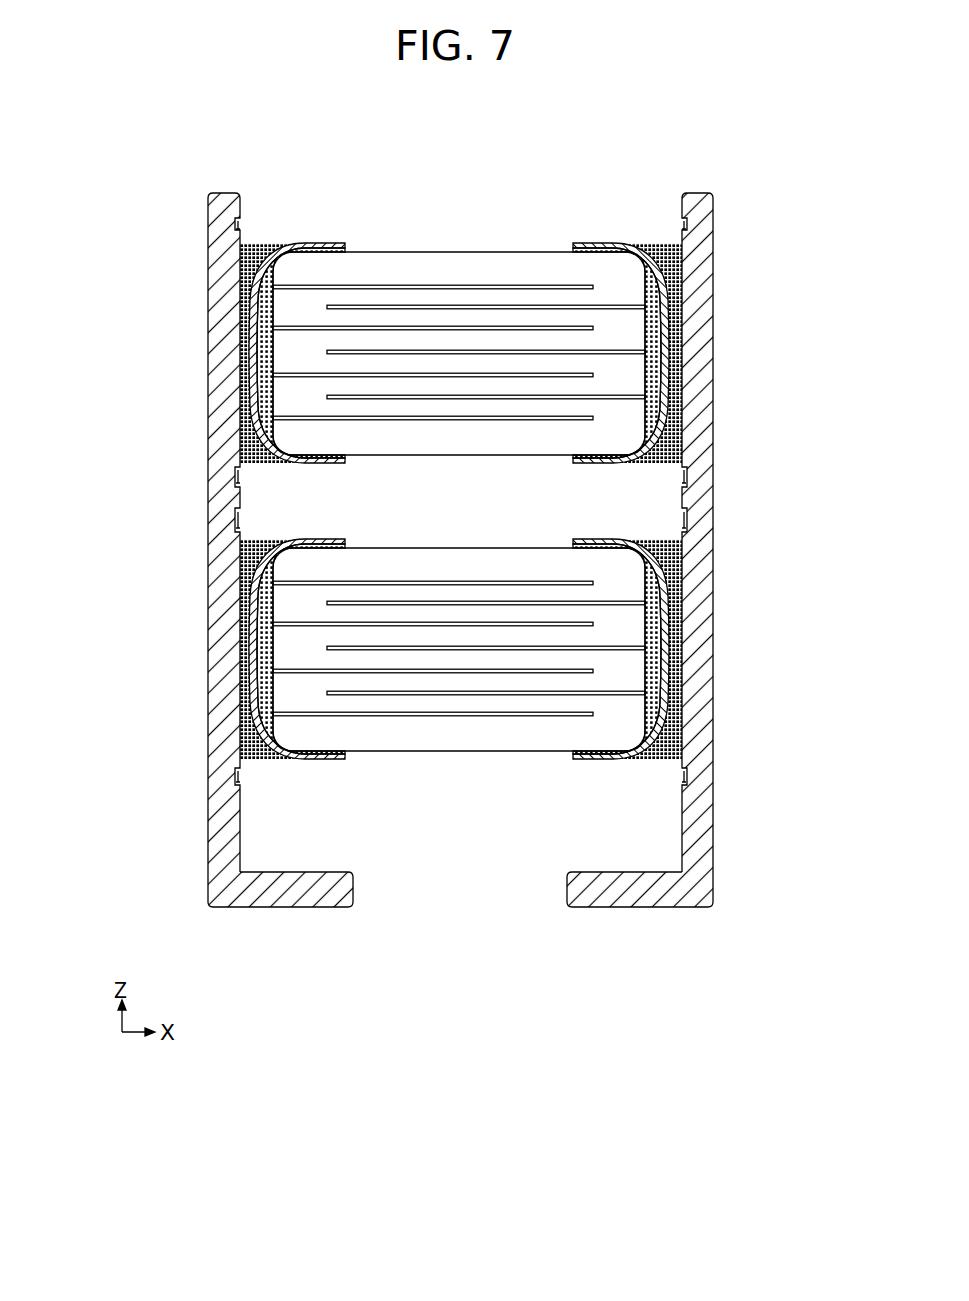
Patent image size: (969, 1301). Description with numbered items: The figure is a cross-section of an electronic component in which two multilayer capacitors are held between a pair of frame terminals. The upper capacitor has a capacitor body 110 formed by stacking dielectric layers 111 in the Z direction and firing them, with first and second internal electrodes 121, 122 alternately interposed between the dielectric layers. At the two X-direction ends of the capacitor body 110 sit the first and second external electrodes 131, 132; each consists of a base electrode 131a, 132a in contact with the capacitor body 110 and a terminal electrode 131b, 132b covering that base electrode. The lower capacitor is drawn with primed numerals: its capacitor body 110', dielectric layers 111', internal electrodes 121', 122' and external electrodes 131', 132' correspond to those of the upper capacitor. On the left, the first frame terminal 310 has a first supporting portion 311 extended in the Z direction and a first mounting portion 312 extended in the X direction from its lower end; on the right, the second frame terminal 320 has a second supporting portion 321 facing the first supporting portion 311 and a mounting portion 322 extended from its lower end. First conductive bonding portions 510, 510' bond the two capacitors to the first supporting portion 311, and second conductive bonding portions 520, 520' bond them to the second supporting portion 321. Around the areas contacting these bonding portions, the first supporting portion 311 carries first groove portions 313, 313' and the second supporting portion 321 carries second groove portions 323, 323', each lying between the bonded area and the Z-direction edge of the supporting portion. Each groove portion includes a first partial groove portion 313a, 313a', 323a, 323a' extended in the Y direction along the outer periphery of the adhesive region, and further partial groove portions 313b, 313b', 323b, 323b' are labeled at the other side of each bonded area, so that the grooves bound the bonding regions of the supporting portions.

The capacitor body 110 is at (523, 329).
The dielectric layer 111 is at (523, 353).
The first internal electrode 121 is at (550, 336).
The second internal electrode 122 is at (523, 352).
The first external electrode 131 is at (307, 295).
The first base electrode 131a is at (328, 244).
The first terminal electrode 131b is at (300, 244).
The second external electrode 132 is at (612, 295).
The second base electrode 132a is at (655, 163).
The second terminal electrode 132b is at (623, 244).
The first frame terminal 310 is at (382, 650).
The first supporting portion 311 is at (222, 858).
The first mounting portion 312 is at (247, 896).
The first groove portion 313 is at (397, 618).
The first partial groove portion 313a is at (196, 457).
The first upper bonding protrusion 313b is at (198, 197).
The second frame terminal 320 is at (698, 650).
The second supporting portion 321 is at (698, 858).
The mounting portion 322 is at (667, 896).
The second groove portion 323 is at (735, 618).
The first partial groove portion 323a is at (727, 457).
The second upper bonding protrusion 323b is at (723, 197).
The first conductive bonding portion 510 is at (227, 353).
The second conductive bonding portion 520 is at (693, 349).
The second capacitor body 110' is at (525, 717).
The dielectric layer of second body 111' is at (525, 649).
The first internal electrode of second body 121' is at (552, 632).
The second internal electrode of second body 122' is at (525, 648).
The first external electrode of second body 131' is at (350, 774).
The second external electrode of second body 132' is at (569, 774).
The first groove portion 313' is at (399, 807).
The first partial groove portion 313a' is at (274, 864).
The first lower bonding protrusion (upper) 313b' is at (196, 501).
The second groove portion 323' is at (707, 807).
The first partial groove portion 323a' is at (643, 866).
The second lower bonding protrusion (upper) 323b' is at (728, 501).
The first conductive bonding portion 510' is at (304, 742).
The second conductive bonding portion 520' is at (618, 741).